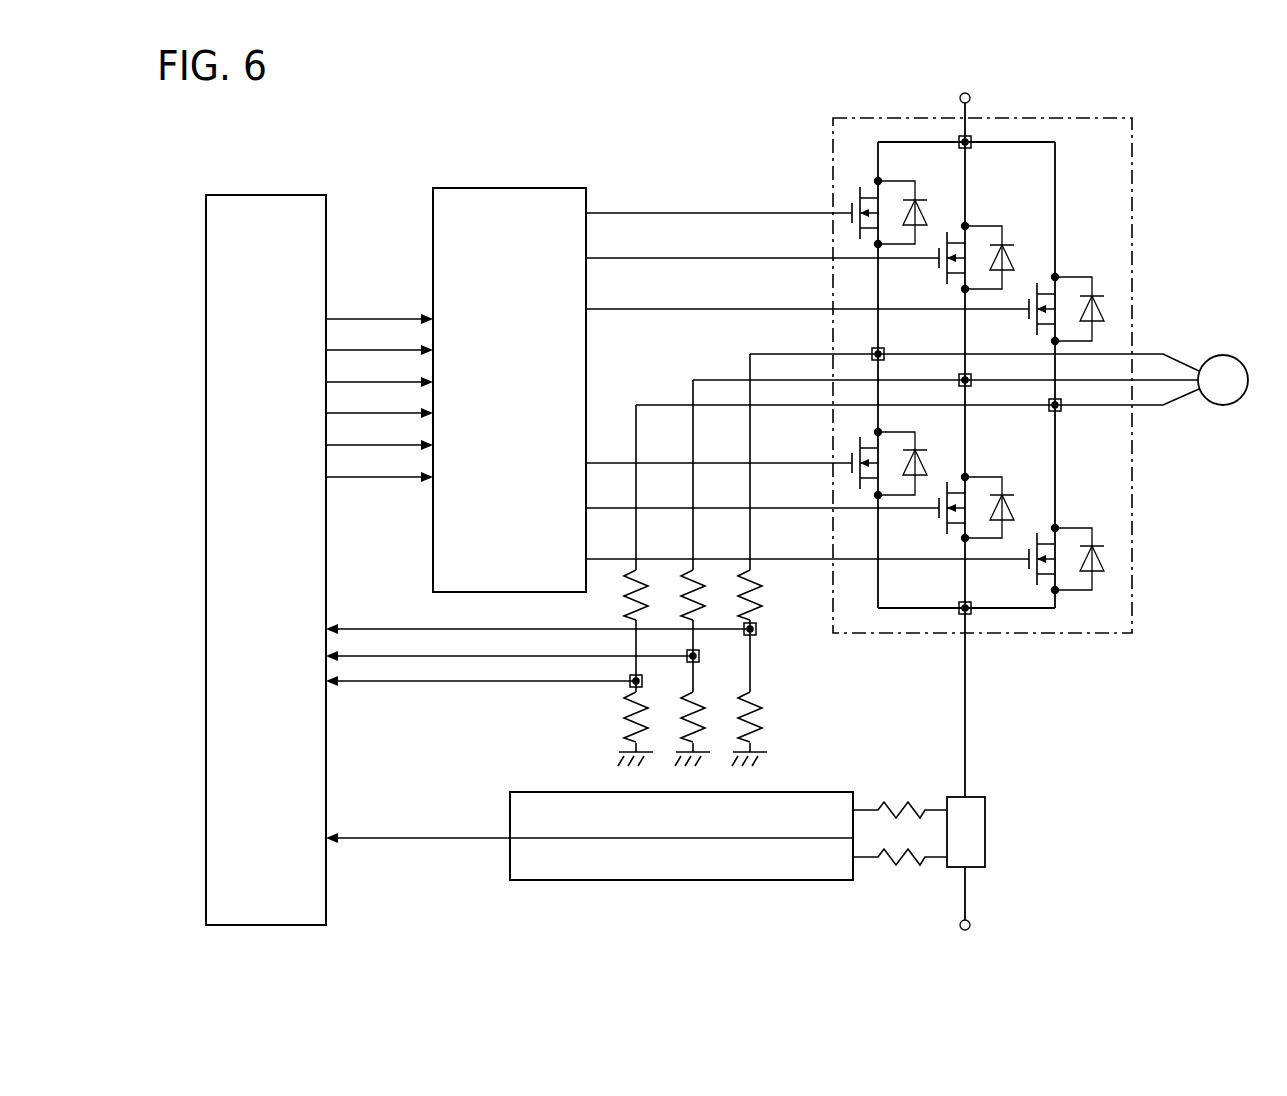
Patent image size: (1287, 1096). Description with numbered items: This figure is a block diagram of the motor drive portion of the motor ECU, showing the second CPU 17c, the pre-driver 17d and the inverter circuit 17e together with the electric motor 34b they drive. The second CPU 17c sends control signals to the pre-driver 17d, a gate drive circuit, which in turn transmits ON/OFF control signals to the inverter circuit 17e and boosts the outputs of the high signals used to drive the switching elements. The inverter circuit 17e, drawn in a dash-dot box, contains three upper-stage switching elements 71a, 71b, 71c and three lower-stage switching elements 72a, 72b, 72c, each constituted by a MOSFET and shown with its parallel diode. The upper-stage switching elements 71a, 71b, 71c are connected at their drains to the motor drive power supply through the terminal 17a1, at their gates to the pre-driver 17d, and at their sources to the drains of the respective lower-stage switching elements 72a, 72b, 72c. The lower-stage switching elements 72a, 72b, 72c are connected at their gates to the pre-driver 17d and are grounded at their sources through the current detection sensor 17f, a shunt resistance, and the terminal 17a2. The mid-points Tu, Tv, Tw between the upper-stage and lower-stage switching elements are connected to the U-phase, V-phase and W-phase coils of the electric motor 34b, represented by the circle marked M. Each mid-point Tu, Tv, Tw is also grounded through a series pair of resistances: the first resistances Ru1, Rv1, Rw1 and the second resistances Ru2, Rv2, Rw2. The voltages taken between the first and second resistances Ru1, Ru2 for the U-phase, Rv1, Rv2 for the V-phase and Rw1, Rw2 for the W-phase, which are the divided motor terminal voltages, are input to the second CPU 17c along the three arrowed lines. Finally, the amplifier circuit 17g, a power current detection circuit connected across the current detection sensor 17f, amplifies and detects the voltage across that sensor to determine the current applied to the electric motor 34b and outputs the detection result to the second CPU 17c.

The second CPU 17c is at (281, 195).
The pre-driver 17d is at (493, 188).
The inverter circuit 17e is at (830, 178).
The current detection sensor 17f is at (985, 832).
The amplifier circuit 17g is at (625, 792).
The terminal 17a1 is at (970, 93).
The terminal 17a2 is at (970, 918).
The upper-stage switching element 71a is at (845, 220).
The upper-stage switching element 71b is at (940, 268).
The upper-stage switching element 71c is at (1030, 320).
The lower-stage switching element 72a is at (848, 455).
The lower-stage switching element 72b is at (940, 518).
The lower-stage switching element 72c is at (1030, 570).
The electric motor 34b is at (1223, 355).
The mid-point Tu is at (870, 352).
The mid-point Tv is at (968, 386).
The mid-point Tw is at (1058, 410).
The first resistance Rw1 is at (652, 582).
The first resistance Rv1 is at (710, 582).
The first resistance Ru1 is at (768, 582).
The second resistance Rw2 is at (622, 725).
The second resistance Rv2 is at (708, 705).
The second resistance Ru2 is at (768, 705).